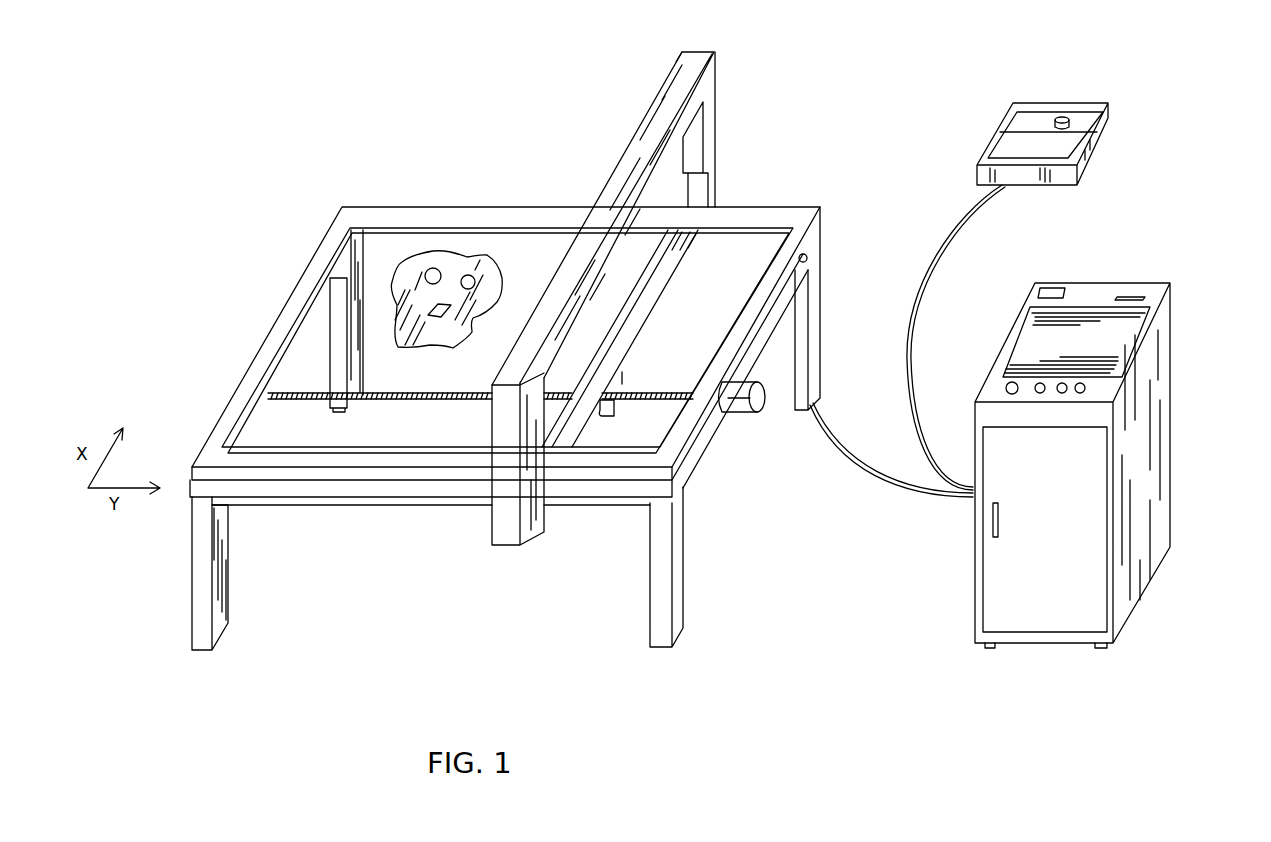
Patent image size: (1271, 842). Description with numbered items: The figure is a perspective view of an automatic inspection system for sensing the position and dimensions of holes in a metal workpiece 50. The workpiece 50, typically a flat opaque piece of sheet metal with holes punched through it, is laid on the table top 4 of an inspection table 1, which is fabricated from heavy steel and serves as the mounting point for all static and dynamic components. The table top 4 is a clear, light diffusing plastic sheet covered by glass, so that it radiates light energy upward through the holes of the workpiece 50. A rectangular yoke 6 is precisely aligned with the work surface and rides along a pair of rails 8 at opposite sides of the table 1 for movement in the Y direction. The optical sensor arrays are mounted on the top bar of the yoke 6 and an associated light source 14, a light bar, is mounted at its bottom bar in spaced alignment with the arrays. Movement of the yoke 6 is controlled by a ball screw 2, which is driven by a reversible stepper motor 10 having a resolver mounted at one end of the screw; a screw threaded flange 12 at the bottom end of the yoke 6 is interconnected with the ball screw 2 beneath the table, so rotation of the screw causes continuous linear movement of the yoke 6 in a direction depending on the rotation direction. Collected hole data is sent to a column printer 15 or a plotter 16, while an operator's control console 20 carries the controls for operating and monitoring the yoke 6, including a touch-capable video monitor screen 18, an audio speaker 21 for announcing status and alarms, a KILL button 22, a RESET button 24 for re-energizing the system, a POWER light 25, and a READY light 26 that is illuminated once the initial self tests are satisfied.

The inspection table 1 is at (453, 614).
The ball screw 2 is at (437, 392).
The table top 4 is at (492, 238).
The yoke 6 is at (710, 127).
The rails 8 is at (398, 488).
The reversible stepper motor 10 is at (730, 412).
The screw threaded flange 12 is at (603, 414).
The light source 14 is at (653, 278).
The column printer 15 is at (1137, 296).
The plotter 16 is at (1002, 130).
The screen 18 is at (1107, 338).
The operator's control console 20 is at (1195, 393).
The audio speaker 21 is at (1035, 292).
The KILL button 22 is at (1005, 388).
The RESET button 24 is at (1040, 396).
The POWER light 25 is at (1062, 396).
The READY light 26 is at (1080, 396).
The workpiece 50 is at (495, 278).